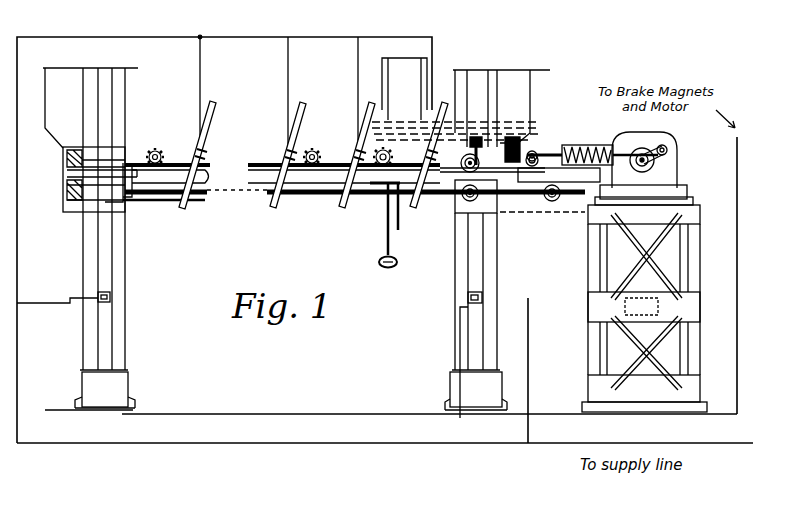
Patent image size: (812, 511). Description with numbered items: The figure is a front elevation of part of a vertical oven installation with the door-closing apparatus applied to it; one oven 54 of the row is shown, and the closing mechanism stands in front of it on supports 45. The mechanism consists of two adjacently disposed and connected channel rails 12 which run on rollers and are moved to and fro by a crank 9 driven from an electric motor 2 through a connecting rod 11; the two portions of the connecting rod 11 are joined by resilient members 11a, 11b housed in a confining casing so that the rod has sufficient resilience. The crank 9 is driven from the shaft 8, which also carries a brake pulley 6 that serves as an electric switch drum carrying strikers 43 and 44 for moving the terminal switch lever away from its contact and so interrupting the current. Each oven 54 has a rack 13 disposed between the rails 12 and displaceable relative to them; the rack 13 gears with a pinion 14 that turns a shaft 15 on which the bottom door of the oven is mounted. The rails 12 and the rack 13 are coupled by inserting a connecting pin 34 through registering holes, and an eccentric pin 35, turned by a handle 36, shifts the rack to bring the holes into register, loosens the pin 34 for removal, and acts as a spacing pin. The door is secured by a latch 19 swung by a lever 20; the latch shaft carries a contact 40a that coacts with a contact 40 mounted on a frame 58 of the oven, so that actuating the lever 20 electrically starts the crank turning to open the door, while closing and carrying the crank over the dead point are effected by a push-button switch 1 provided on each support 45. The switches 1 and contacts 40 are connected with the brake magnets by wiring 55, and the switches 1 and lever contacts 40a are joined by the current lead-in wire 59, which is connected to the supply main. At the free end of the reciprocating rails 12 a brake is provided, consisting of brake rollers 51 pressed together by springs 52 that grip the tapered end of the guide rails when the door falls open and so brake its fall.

The push-button switch 1 is at (98, 297).
The electric motor 2 is at (440, 148).
The brake pulley 6 is at (668, 147).
The shaft 8 is at (658, 164).
The crank 9 is at (670, 188).
The connecting rod 11 is at (606, 145).
The resilient member 11a is at (584, 145).
The resilient member 11b is at (627, 150).
The channel rails 12 is at (212, 195).
The rack 13 is at (168, 160).
The pinion 14 is at (316, 150).
The shaft 15 is at (312, 148).
The latch 19 is at (450, 150).
The lever 20 is at (370, 103).
The connecting pin 34 is at (400, 226).
The eccentric pin 35 is at (380, 196).
The handle 36 is at (379, 262).
The contact 40 is at (204, 140).
The contact 40a is at (298, 140).
The striker 43 is at (100, 168).
The striker 44 is at (688, 183).
The support 45 is at (85, 345).
The brake rollers 51 is at (67, 172).
The springs 52 is at (67, 193).
The oven 54 is at (388, 76).
The wiring 55 is at (283, 200).
The frame 58 is at (160, 203).
The current lead-in wire 59 is at (127, 37).